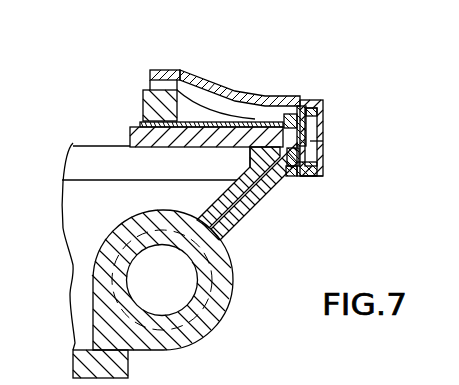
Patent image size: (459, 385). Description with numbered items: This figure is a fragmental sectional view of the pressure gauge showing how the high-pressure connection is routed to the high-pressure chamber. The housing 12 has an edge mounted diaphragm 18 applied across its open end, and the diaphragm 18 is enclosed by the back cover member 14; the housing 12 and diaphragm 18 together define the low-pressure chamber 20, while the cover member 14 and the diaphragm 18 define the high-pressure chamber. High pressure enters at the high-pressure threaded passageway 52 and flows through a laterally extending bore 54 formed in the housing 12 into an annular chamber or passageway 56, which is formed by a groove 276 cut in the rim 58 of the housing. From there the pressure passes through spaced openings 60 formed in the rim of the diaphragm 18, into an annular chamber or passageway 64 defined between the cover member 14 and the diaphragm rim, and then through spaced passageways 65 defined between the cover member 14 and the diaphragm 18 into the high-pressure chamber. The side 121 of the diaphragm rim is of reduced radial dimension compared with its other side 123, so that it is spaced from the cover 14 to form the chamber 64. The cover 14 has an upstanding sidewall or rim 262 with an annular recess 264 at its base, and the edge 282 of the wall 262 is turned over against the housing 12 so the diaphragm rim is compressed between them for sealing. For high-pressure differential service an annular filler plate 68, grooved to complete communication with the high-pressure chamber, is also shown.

The housing 12 is at (226, 326).
The back cover member 14 is at (249, 87).
The diaphragm 18 is at (194, 118).
The low-pressure chamber 20 is at (97, 200).
The high-pressure threaded passageway 52 is at (193, 289).
The bore 54 is at (248, 212).
The annular chamber or passageway 56 is at (291, 178).
The rim of the housing 58 is at (316, 170).
The spaced openings 60 is at (320, 133).
The annular chamber or passageway 64 is at (294, 108).
The spaced passageways 65 is at (263, 110).
The annular filler plate 68 is at (143, 102).
The side of the diaphragm rim 121 is at (320, 112).
The other side of the diaphragm rim 123 is at (250, 163).
The upstanding sidewall or rim 262 is at (323, 141).
The annular recess 264 is at (323, 122).
The groove 276 is at (318, 156).
The edge of the cover wall 282 is at (312, 178).